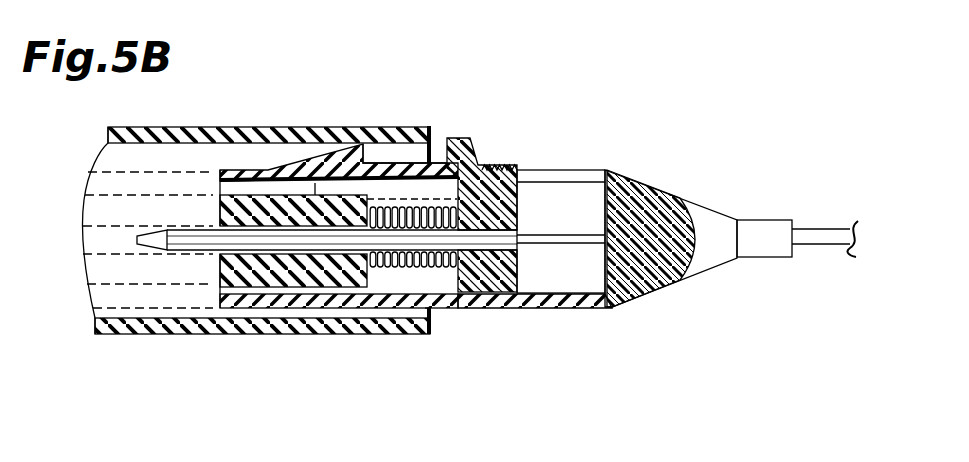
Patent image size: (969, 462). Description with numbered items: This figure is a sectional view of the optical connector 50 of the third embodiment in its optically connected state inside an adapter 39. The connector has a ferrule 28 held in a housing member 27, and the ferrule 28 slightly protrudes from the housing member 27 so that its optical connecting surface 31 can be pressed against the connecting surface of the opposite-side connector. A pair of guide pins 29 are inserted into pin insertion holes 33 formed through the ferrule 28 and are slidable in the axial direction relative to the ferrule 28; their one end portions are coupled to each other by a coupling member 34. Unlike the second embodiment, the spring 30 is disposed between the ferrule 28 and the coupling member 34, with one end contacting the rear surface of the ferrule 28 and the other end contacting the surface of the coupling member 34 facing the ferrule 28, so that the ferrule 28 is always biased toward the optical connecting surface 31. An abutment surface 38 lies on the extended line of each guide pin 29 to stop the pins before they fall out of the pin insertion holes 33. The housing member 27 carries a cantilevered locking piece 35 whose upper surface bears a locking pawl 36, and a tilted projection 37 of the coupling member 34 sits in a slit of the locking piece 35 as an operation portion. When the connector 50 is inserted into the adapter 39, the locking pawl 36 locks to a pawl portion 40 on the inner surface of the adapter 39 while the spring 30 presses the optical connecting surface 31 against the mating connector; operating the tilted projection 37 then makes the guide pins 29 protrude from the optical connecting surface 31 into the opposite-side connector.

The housing member 27 is at (440, 310).
The ferrule 28 is at (270, 273).
The guide pins 29 is at (416, 268).
The spring 30 is at (432, 312).
The optical connecting surface 31 is at (217, 207).
The pin insertion holes 33 is at (320, 257).
The coupling member 34 is at (497, 300).
The locking piece 35 is at (444, 162).
The locking pawl 36 is at (345, 133).
The tilted projection 37 is at (508, 180).
The abutment surface 38 is at (604, 276).
The adapter 39 is at (178, 335).
The pawl portion 40 is at (374, 146).
The optical connector 50 is at (668, 172).